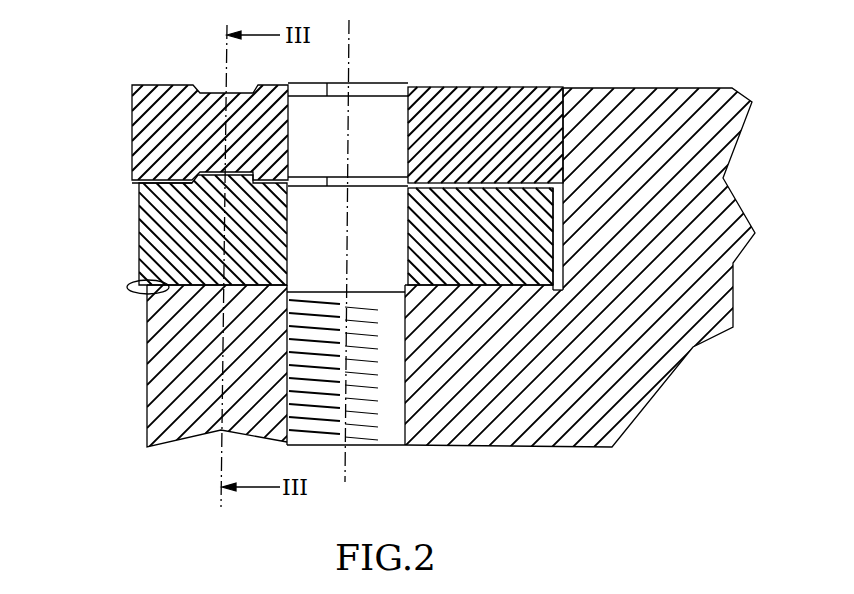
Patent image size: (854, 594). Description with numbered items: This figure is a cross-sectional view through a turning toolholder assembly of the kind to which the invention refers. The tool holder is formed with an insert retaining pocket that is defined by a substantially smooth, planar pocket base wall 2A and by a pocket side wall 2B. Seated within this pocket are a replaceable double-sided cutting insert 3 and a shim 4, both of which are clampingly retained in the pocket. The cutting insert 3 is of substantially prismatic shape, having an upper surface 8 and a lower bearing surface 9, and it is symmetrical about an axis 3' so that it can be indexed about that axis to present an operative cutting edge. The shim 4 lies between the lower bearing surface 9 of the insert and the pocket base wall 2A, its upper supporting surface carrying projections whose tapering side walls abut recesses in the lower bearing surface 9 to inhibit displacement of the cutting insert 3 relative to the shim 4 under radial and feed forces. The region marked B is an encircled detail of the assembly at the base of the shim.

The pocket base wall 2A is at (157, 337).
The pocket side wall 2B is at (597, 97).
The cutting insert 3 is at (425, 97).
The axis 3' is at (390, 245).
The shim 4 is at (160, 212).
The upper surface 8 is at (167, 84).
The lower bearing surface 9 is at (138, 186).
The region B is at (128, 289).